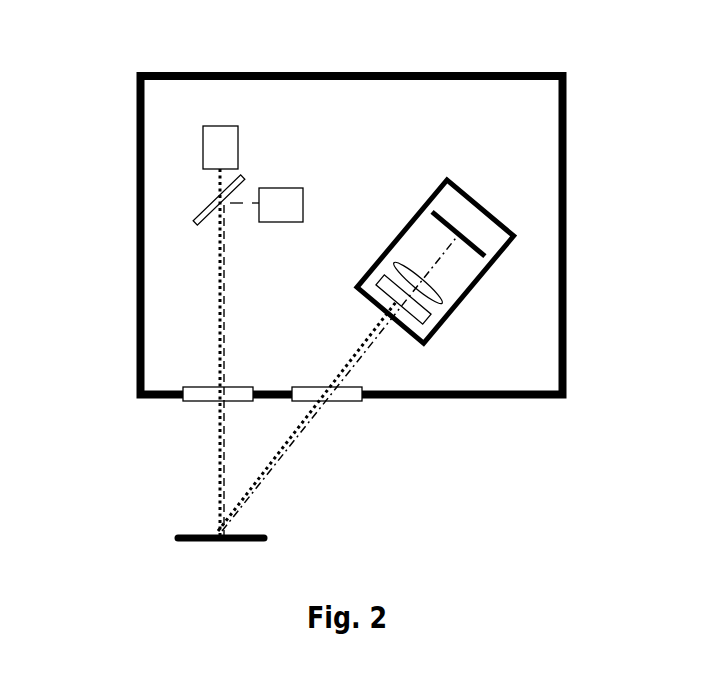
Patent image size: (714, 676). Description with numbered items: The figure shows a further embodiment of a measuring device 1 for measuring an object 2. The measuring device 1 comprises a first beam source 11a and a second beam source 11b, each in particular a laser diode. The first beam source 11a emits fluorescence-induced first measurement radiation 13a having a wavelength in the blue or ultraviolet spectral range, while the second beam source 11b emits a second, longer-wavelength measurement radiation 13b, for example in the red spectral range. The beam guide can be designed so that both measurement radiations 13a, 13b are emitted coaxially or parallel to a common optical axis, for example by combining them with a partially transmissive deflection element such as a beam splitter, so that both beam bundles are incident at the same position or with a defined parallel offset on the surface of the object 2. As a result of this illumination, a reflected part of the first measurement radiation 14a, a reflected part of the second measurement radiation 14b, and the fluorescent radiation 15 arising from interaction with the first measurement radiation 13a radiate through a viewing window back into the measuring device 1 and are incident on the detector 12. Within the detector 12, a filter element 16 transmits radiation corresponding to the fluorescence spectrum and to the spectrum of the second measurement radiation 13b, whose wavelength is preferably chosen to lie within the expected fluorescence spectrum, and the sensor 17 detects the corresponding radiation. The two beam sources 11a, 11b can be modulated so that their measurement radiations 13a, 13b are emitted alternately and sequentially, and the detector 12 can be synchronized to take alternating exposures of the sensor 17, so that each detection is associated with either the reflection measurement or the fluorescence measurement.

The measuring device 1 is at (488, 27).
The object 2 is at (193, 533).
The first beam source 11a is at (220, 140).
The second beam source 11b is at (282, 203).
The detector 12 is at (493, 232).
The first measurement radiation 13a is at (220, 258).
The second measurement radiation 13b is at (243, 203).
The reflected part of the first measurement radiation 14a is at (293, 447).
The reflected part of the second measurement radiation 14b is at (337, 493).
The fluorescent radiation 15 is at (337, 493).
The filter element 16 is at (420, 320).
The sensor 17 is at (483, 262).